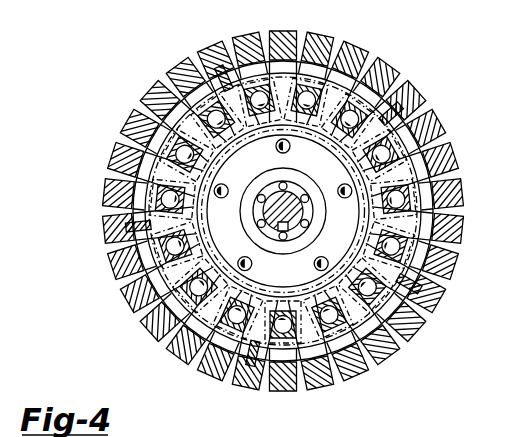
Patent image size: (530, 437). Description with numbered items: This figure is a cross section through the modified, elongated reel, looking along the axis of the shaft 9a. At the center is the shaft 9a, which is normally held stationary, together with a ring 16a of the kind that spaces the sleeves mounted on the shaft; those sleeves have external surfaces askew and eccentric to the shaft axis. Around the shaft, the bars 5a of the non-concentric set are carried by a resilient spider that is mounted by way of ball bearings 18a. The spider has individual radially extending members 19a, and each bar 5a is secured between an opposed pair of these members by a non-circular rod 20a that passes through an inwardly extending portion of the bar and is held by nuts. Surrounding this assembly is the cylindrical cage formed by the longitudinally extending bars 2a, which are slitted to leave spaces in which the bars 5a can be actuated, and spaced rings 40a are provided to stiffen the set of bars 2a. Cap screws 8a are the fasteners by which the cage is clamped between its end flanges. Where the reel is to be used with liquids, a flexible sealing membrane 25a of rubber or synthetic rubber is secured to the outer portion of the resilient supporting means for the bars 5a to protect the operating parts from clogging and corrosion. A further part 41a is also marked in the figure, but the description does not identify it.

The bars 5a is at (383, 62).
The bars 2a is at (407, 88).
The spaced rings 40a is at (415, 148).
The radially extending members 19a is at (395, 206).
The spring-loaded plunger assembly 41a is at (298, 100).
The non-circular rod 20a is at (262, 128).
The flexible sealing membrane 25a is at (250, 198).
The ball bearings 18a is at (290, 217).
The shaft 9a is at (283, 202).
The ring 16a is at (275, 223).
The cap screws 8a is at (229, 254).